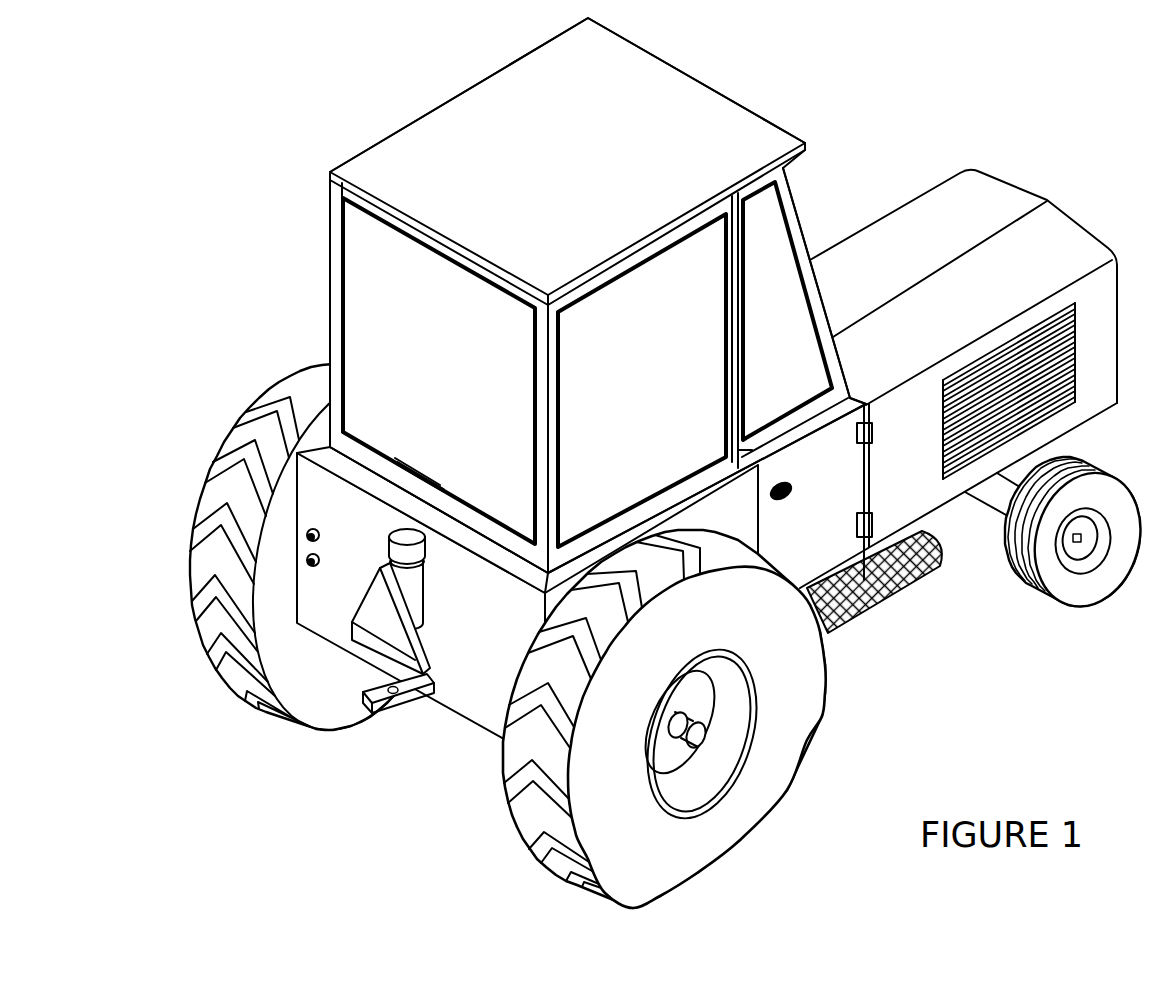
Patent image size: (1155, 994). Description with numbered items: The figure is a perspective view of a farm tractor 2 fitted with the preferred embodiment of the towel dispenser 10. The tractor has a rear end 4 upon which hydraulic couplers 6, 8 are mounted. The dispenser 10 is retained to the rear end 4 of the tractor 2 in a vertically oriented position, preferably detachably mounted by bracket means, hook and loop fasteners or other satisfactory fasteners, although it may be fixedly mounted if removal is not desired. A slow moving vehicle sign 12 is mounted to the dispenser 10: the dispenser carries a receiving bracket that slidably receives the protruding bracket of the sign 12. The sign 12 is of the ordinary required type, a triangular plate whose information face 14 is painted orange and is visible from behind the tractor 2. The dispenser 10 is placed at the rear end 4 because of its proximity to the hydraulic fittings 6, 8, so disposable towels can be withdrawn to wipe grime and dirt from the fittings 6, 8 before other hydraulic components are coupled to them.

The farm tractor 2 is at (666, 463).
The rear end 4 is at (313, 478).
The hydraulic coupler 6 is at (308, 533).
The hydraulic coupler 8 is at (308, 558).
The dispenser 10 is at (415, 593).
The slow moving vehicle sign 12 is at (417, 657).
The information face 14 is at (370, 620).